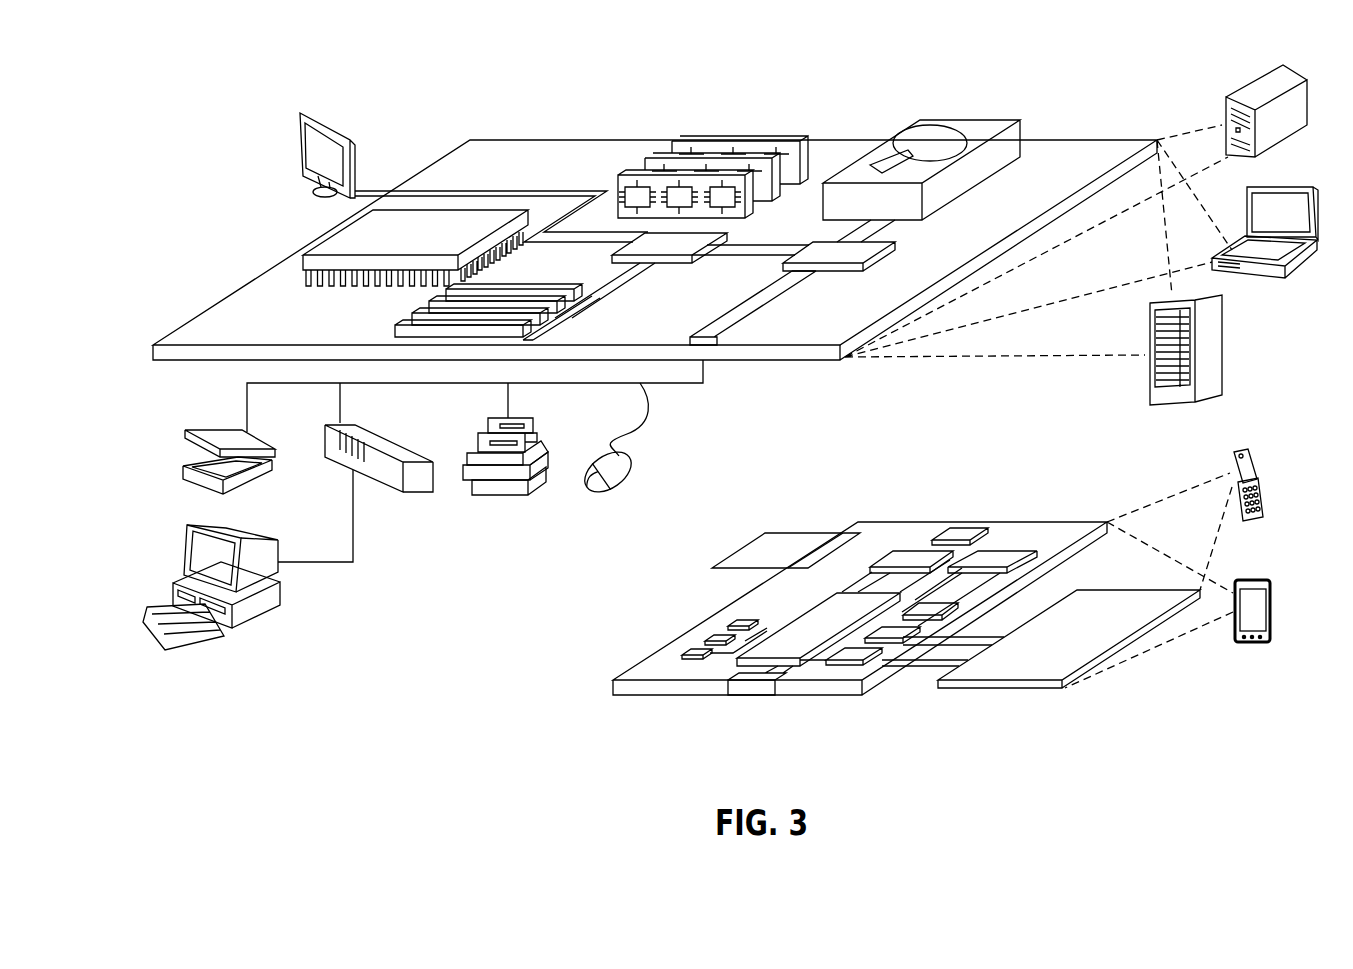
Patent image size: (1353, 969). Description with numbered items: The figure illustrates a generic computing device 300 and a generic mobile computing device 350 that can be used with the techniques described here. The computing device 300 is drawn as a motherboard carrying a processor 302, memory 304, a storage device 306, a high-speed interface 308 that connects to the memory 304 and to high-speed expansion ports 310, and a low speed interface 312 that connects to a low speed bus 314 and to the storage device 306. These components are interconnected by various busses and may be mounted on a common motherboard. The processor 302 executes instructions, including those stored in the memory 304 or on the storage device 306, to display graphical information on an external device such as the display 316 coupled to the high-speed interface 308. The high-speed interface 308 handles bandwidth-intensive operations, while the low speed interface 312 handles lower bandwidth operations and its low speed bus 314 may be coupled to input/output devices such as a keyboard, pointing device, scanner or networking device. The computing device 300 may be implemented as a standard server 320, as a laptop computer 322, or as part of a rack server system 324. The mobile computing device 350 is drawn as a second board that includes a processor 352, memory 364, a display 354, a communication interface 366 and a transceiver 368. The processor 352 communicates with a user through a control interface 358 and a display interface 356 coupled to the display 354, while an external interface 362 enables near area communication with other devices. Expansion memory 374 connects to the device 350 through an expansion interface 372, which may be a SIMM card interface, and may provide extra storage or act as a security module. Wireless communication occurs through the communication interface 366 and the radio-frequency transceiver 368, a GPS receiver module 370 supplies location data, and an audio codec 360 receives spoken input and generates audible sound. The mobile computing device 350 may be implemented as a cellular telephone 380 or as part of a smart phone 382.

The computing device 300 is at (423, 90).
The processor 302 is at (325, 238).
The memory 304 is at (743, 133).
The storage device 306 is at (962, 118).
The high-speed interface 308 is at (682, 242).
The high-speed expansion ports 310 is at (417, 312).
The low speed interface 312 is at (813, 243).
The low speed bus 314 is at (708, 330).
The display 316 is at (303, 112).
The standard server 320 is at (1247, 90).
The laptop computer 322 is at (1297, 185).
The rack server system 324 is at (1222, 349).
The mobile computer device 350 is at (566, 705).
The processor 352 is at (788, 633).
The display 354 is at (1105, 602).
The display interface 356 is at (858, 655).
The control interface 358 is at (897, 631).
The audio codec 360 is at (933, 605).
The external interface 362 is at (752, 687).
The memory 364 is at (708, 638).
The communication interface 366 is at (913, 552).
The transceiver 368 is at (998, 552).
The GPS receiver module 370 is at (962, 530).
The expansion interface 372 is at (842, 532).
The expansion memory 374 is at (765, 532).
The cellular telephone 380 is at (1243, 447).
The smart phone 382 is at (1243, 582).